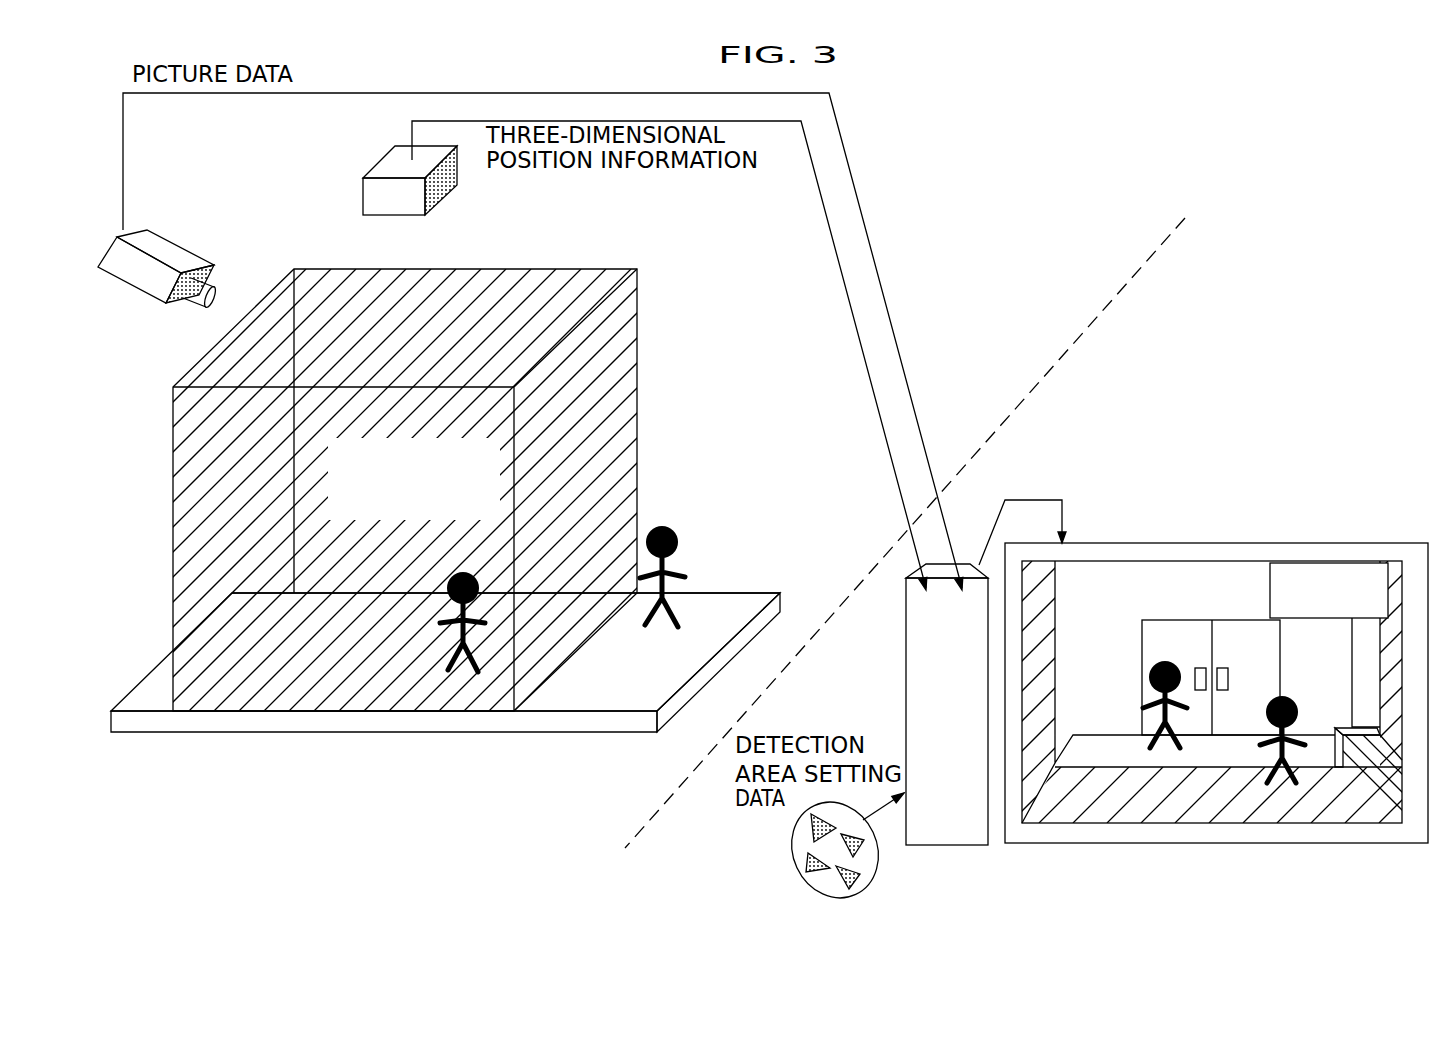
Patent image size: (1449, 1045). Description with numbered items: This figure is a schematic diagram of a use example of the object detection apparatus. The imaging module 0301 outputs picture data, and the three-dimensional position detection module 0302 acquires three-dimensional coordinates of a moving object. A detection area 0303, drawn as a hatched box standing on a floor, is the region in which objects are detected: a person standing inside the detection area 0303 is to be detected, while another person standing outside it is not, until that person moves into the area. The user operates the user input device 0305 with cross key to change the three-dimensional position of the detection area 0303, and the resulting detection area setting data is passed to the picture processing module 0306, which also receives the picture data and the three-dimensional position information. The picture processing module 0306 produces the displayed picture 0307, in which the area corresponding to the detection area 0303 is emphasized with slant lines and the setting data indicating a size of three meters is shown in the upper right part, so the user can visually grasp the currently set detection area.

The imaging module 0301 is at (215, 193).
The three-dimensional position detection module 0302 is at (457, 192).
The detection area 0303 is at (638, 346).
The user input device with cross key 0305 is at (792, 857).
The picture processing module 0306 is at (950, 846).
The displayed picture 0307 is at (1178, 561).